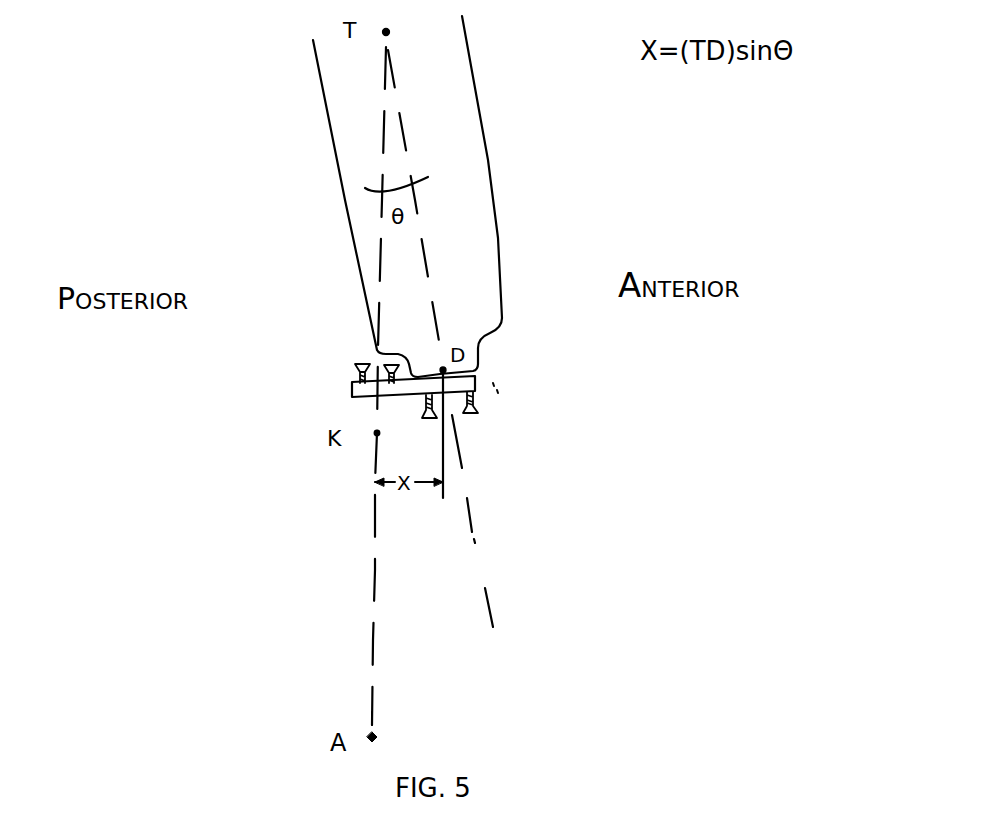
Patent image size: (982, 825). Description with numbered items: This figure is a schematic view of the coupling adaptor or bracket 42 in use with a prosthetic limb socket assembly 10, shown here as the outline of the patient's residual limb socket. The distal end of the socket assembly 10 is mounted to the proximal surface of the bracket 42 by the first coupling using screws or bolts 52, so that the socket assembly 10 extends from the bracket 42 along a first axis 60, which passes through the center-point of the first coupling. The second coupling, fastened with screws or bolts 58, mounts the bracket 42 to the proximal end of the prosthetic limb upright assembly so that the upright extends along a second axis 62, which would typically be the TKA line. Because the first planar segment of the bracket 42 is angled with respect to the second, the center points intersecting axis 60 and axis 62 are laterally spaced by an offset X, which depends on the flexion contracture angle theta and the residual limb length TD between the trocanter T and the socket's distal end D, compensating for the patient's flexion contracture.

The prosthetic limb socket assembly 10 is at (482, 197).
The coupling adaptor or bracket 42 is at (477, 374).
The screws or bolts 52 is at (423, 417).
The screws or bolts 58 is at (382, 366).
The first axis 60 is at (470, 513).
The second axis 62 is at (375, 567).